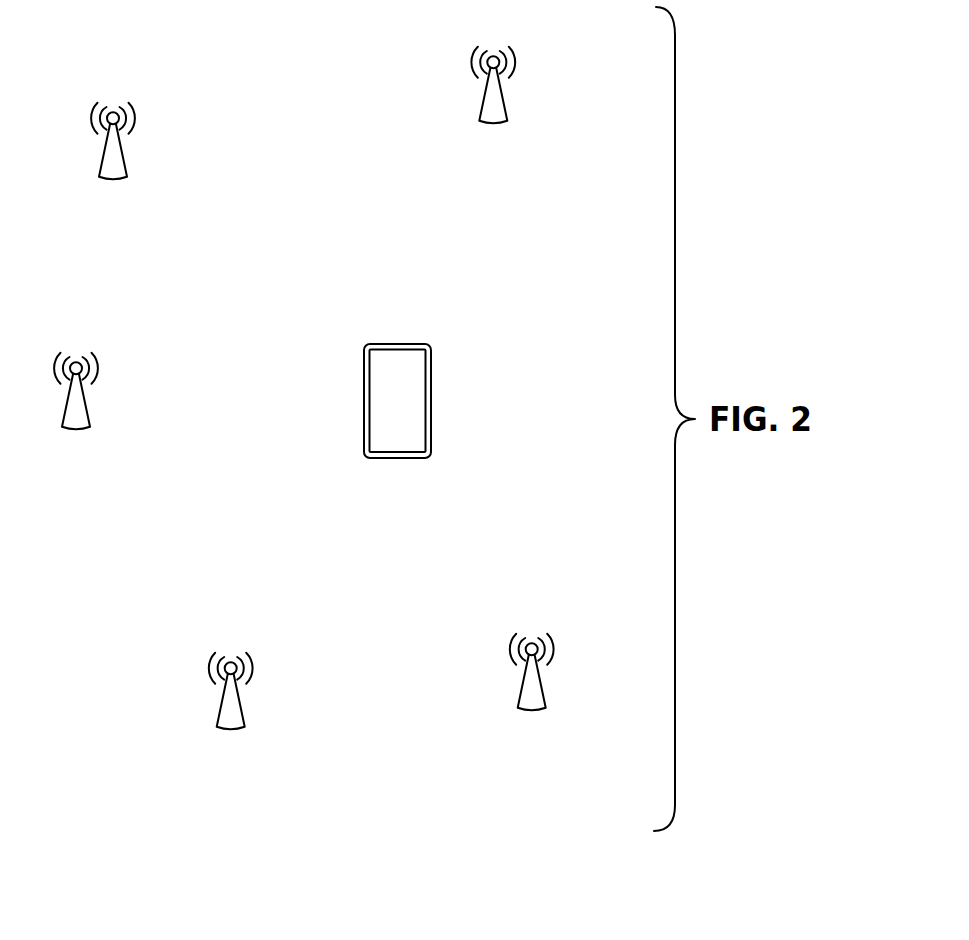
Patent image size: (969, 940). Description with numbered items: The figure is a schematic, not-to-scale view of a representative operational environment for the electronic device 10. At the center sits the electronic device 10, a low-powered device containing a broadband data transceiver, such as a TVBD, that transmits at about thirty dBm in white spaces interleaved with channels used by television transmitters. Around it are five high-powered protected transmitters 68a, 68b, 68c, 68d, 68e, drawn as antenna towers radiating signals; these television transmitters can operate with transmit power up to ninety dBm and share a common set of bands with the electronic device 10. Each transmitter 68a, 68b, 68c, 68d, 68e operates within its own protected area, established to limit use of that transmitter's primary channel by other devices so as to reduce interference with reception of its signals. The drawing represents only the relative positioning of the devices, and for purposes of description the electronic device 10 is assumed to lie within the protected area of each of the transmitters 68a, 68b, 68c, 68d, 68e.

The electronic device 10 is at (413, 396).
The high-powered protected transmitter 68a is at (152, 153).
The high-powered protected transmitter 68b is at (532, 95).
The high-powered protected transmitter 68c is at (115, 401).
The high-powered protected transmitter 68d is at (270, 704).
The high-powered protected transmitter 68e is at (570, 682).